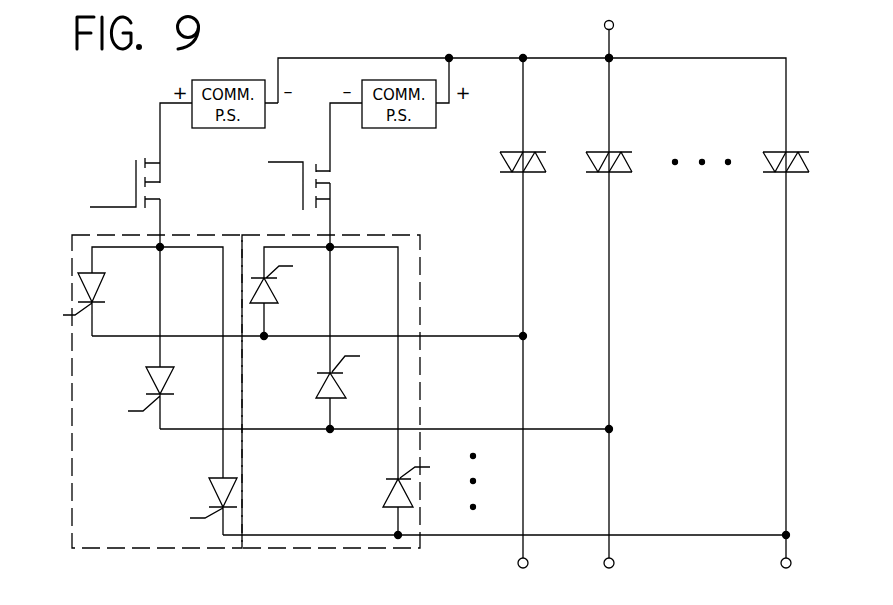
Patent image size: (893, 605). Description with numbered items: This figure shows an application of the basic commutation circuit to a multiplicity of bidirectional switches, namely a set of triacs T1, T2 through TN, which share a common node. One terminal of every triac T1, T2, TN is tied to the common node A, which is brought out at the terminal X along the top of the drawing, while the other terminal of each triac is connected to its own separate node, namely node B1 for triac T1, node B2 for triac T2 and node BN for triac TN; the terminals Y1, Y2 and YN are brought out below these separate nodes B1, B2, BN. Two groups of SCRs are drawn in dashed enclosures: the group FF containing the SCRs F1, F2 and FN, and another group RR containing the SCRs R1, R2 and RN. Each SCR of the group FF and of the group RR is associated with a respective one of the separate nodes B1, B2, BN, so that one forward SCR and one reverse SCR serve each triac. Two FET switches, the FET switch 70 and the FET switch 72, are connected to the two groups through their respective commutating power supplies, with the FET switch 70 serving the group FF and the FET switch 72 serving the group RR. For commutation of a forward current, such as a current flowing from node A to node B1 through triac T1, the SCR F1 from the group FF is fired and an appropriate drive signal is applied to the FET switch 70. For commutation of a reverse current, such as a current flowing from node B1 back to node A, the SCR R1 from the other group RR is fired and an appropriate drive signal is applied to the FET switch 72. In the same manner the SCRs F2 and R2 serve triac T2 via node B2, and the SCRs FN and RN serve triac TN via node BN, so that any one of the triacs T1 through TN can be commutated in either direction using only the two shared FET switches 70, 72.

The FET switch 70 is at (170, 189).
The FET switch 72 is at (338, 179).
The anode terminal X is at (614, 24).
The common node A is at (609, 58).
The triac T1 is at (528, 149).
The triac T2 is at (614, 149).
The triac TN is at (793, 149).
The separate node B1 is at (523, 336).
The separate node B2 is at (609, 429).
The separate node BN is at (786, 535).
The terminal Y1 is at (521, 576).
The terminal Y2 is at (607, 576).
The terminal YN is at (784, 577).
The group FF is at (125, 498).
The group RR is at (322, 498).
The SCR F1 is at (99, 304).
The forward thyristor F2 is at (164, 398).
The forward thyristor FN is at (209, 506).
The SCR R1 is at (279, 301).
The reverse thyristor R2 is at (346, 392).
The reverse thyristor RN is at (391, 501).